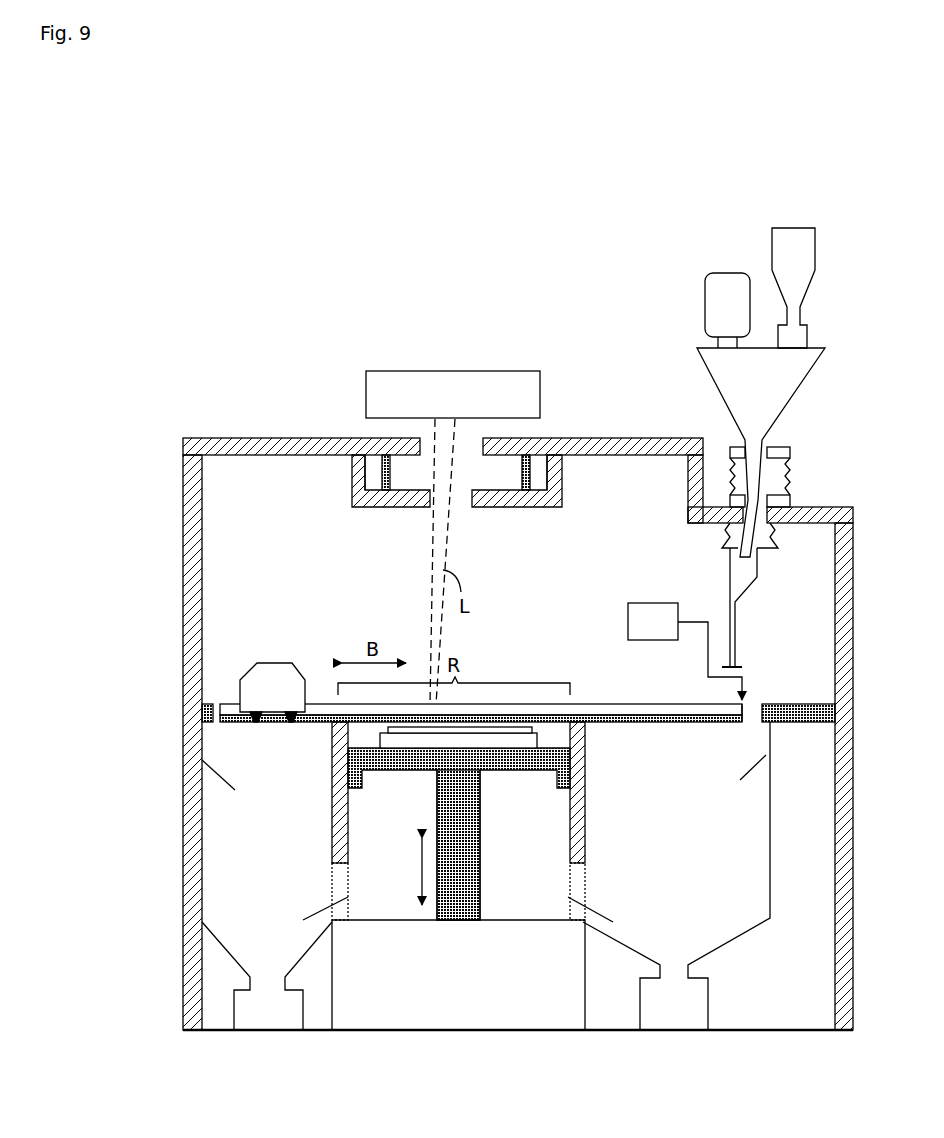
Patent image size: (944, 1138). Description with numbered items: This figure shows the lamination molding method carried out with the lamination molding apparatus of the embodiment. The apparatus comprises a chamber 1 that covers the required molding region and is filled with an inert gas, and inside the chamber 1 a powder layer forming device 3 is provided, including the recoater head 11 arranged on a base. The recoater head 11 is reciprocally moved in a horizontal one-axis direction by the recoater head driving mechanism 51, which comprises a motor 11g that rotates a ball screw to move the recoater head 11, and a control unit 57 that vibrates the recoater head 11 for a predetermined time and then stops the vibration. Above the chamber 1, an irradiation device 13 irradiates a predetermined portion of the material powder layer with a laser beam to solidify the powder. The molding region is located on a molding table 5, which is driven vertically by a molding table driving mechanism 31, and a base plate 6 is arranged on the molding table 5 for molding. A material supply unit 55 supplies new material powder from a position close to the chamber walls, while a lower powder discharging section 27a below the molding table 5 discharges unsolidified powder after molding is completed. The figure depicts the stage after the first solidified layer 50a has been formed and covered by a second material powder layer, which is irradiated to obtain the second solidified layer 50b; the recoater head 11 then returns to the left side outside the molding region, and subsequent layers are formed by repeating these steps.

The chamber 1 is at (260, 438).
The powder layer forming device 3 is at (270, 645).
The recoater head 11 is at (290, 660).
The motor 11g is at (742, 735).
The irradiation device 13 is at (418, 370).
The molding table 5 is at (459, 834).
The base plate 6 is at (525, 748).
The molding table driving mechanism 31 is at (482, 830).
The lower powder discharging section 27a is at (332, 880).
The first solidified layer 50a is at (385, 733).
The second solidified layer 50b is at (522, 727).
The recoater head driving mechanism 51 is at (688, 730).
The material supply unit 55 is at (686, 342).
The control unit 57 is at (645, 603).